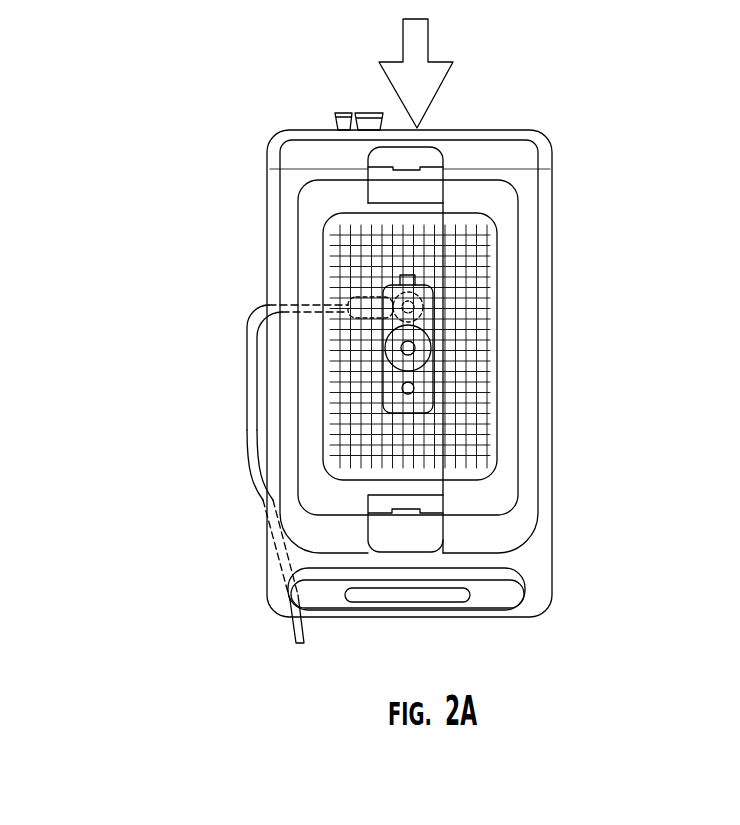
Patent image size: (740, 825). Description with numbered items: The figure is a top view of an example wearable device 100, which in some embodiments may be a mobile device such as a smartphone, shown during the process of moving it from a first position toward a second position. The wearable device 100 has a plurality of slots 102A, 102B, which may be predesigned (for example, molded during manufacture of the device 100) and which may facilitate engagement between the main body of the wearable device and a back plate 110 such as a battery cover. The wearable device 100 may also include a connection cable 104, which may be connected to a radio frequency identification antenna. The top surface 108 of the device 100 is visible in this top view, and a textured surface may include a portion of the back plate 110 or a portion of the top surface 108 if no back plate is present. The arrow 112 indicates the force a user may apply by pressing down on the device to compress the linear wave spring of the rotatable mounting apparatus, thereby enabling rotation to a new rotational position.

The wearable device 100 is at (198, 78).
The slot 102A is at (435, 163).
The slot 102B is at (422, 537).
The connection cable 104 is at (248, 435).
The top surface 108 is at (470, 450).
The back plate 110 is at (525, 519).
The arrow 112 is at (428, 85).